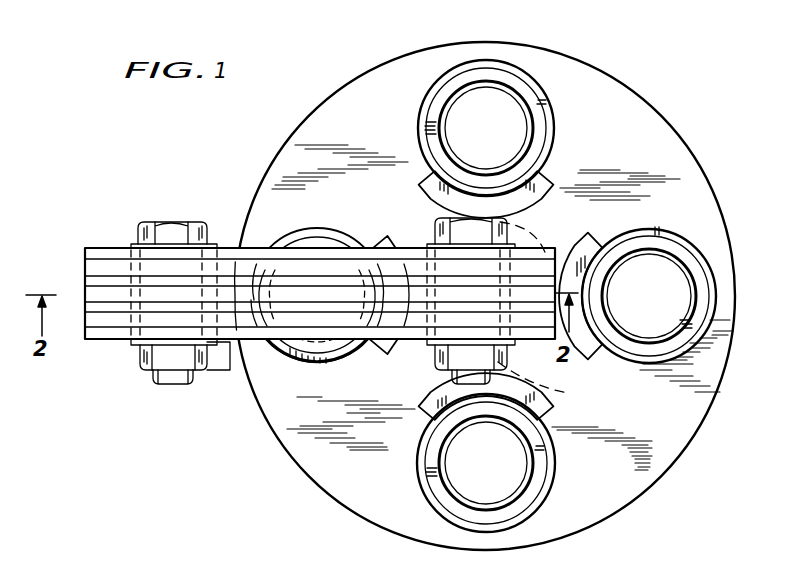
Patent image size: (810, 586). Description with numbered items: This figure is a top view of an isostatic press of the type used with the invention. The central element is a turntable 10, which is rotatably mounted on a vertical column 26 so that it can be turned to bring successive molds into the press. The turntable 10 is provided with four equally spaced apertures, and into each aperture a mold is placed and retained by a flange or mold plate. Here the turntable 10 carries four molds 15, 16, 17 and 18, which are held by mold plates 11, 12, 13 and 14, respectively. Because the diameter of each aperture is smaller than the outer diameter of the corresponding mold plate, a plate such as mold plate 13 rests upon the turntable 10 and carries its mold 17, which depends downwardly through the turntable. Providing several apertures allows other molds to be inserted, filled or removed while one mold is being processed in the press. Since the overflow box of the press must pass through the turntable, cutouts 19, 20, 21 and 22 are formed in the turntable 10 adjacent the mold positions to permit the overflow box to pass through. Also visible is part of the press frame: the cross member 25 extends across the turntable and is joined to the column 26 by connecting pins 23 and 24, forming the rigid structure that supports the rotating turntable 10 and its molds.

The turntable 10 is at (660, 116).
The mold plate 11 is at (684, 244).
The mold plate 12 is at (552, 124).
The mold plate 13 is at (277, 352).
The mold plate 14 is at (550, 469).
The mold 15 is at (658, 283).
The mold 16 is at (493, 119).
The mold 17 is at (326, 354).
The mold 18 is at (496, 489).
The cutout 19 is at (590, 357).
The cutout 20 is at (543, 185).
The cutout 21 is at (381, 235).
The cutout 22 is at (427, 393).
The connecting pin 23 is at (505, 222).
The connecting pin 24 is at (152, 224).
The cross member 25 is at (105, 342).
The vertical column 26 is at (546, 322).